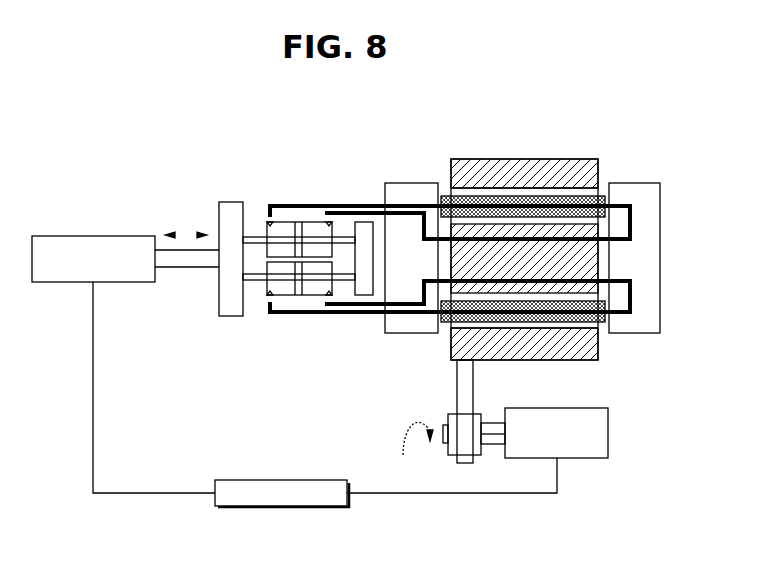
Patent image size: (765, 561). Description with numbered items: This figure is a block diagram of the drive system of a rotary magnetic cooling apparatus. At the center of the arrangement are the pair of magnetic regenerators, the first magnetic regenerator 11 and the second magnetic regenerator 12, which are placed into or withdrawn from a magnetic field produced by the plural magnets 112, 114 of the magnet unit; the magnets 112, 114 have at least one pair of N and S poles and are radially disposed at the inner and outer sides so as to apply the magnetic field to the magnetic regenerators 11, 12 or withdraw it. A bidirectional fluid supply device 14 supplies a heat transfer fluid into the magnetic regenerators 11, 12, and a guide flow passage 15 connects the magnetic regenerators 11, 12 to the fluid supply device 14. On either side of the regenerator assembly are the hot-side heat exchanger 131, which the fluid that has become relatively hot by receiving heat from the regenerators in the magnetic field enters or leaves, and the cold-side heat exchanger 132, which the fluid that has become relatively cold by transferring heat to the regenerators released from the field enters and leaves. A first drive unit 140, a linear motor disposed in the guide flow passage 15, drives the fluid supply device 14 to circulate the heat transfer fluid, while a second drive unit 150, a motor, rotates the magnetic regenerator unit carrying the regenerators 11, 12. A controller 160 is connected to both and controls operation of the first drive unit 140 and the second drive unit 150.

The first magnetic regenerator 11 is at (488, 198).
The second magnetic regenerator 12 is at (568, 318).
The bidirectional fluid supply device 14 is at (292, 222).
The guide flow passage 15 is at (357, 213).
The magnet 112 is at (593, 258).
The magnet 114 is at (545, 158).
The hot-side heat exchanger 131 is at (417, 183).
The cold-side heat exchanger 132 is at (660, 208).
The first drive unit 140 is at (86, 238).
The second drive unit 150 is at (533, 408).
The controller 160 is at (327, 480).